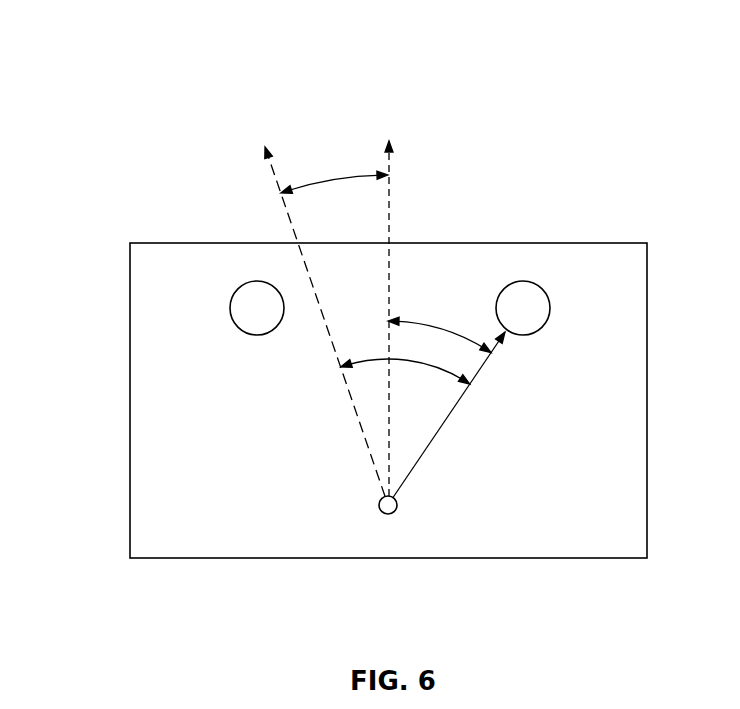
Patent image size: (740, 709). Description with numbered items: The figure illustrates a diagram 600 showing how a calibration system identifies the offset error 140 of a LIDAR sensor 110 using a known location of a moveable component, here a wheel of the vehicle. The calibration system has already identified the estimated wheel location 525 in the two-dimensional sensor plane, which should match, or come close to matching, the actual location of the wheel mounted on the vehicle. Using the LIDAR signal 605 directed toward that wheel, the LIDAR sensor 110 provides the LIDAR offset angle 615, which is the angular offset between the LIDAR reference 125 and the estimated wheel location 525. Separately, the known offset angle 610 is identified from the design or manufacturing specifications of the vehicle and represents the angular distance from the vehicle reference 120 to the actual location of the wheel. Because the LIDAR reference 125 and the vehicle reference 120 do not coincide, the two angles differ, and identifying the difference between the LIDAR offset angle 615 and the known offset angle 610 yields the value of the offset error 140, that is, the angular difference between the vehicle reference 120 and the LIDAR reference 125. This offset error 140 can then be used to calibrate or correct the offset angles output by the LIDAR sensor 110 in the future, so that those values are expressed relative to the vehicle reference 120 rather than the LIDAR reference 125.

The lidar offset estimation diagram 600 is at (106, 140).
The estimated wheel location 525 is at (523, 281).
The LIDAR sensor 110 is at (385, 514).
The LIDAR reference 125 is at (283, 208).
The vehicle reference 120 is at (387, 158).
The LIDAR signal 605 is at (443, 428).
The offset error 140 is at (327, 182).
The known offset angle 610 is at (413, 321).
The LIDAR offset angle 615 is at (365, 363).